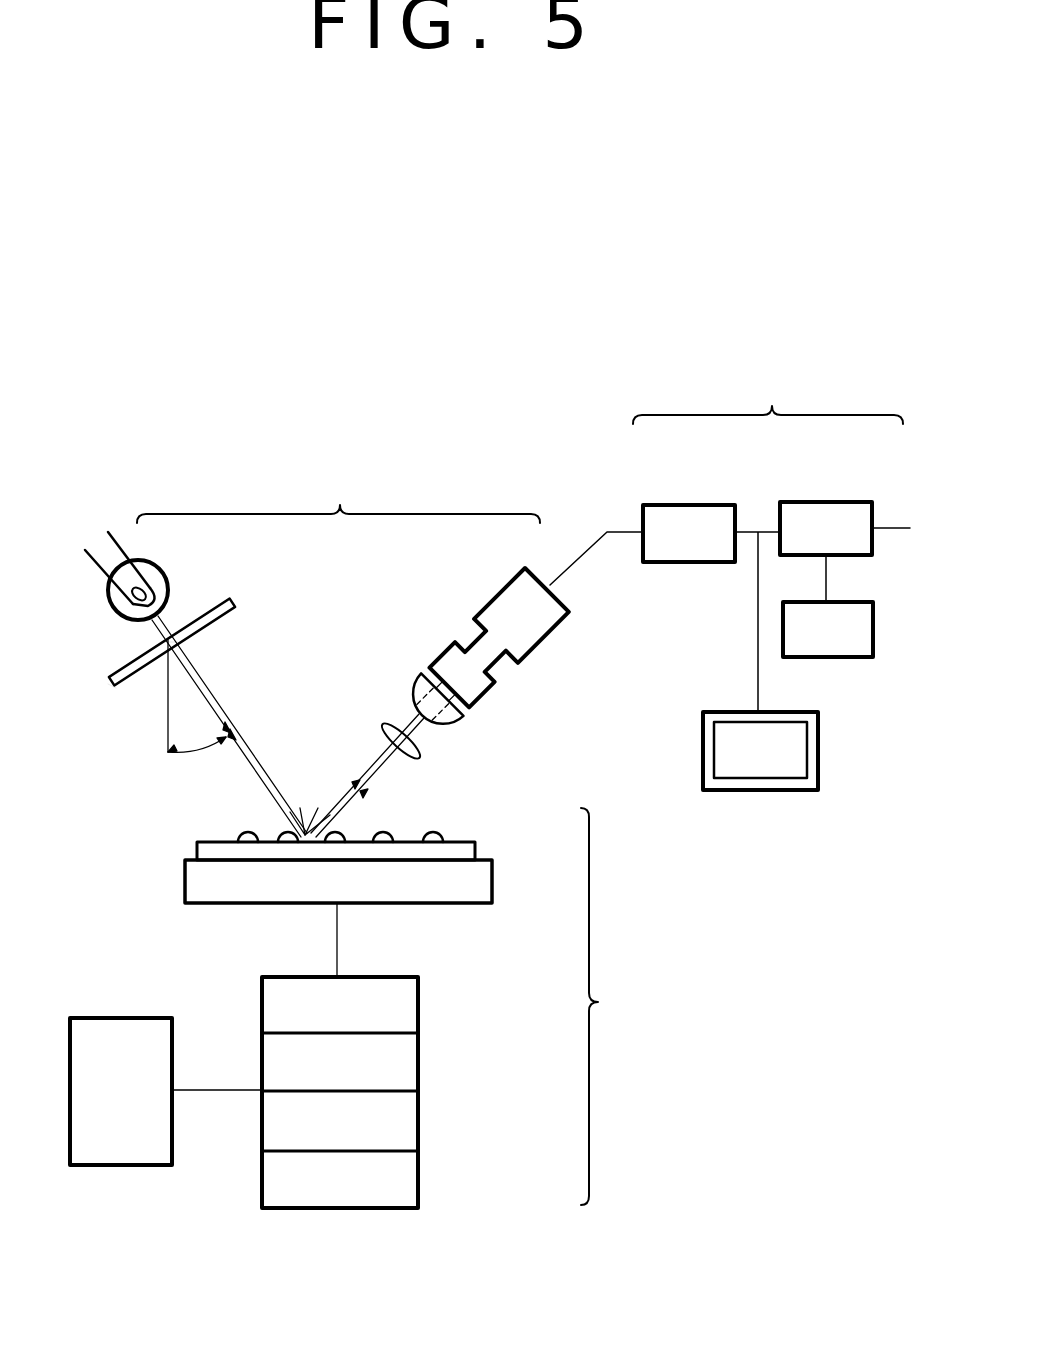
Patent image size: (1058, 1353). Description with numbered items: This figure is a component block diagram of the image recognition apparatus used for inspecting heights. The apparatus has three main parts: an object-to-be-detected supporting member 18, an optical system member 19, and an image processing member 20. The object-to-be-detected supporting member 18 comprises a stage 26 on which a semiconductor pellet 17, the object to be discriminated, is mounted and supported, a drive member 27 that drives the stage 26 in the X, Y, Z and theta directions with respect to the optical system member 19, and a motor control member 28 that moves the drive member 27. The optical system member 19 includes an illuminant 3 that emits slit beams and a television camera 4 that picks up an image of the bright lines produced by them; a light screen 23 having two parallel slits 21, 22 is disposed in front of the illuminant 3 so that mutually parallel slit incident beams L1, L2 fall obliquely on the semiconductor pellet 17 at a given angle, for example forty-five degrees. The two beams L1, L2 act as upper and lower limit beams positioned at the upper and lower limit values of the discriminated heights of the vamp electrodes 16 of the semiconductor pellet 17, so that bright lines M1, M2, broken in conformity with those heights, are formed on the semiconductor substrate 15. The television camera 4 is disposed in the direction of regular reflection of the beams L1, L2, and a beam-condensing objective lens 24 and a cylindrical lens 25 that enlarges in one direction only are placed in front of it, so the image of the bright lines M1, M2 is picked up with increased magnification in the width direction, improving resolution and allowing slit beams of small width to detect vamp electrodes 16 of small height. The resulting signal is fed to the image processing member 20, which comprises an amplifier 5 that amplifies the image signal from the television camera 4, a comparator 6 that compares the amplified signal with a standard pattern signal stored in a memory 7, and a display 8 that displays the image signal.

The illuminant 3 is at (108, 600).
The television camera 4 is at (482, 613).
The amplifier 5 is at (688, 505).
The comparator 6 is at (822, 502).
The memory 7 is at (873, 636).
The display 8 is at (818, 762).
The semiconductor substrate 15 is at (478, 848).
The vamp electrodes 16 is at (440, 832).
The semiconductor pellet 17 is at (166, 848).
The object-to-be-detected supporting member 18 is at (611, 1006).
The optical system member 19 is at (338, 491).
The image processing member 20 is at (768, 398).
The slit 21 is at (205, 607).
The slit 22 is at (164, 638).
The light screen 23 is at (110, 688).
The beam-condensing objective lens 24 is at (398, 735).
The cylindrical lens 25 is at (422, 688).
The stage 26 is at (485, 905).
The drive member 27 is at (418, 1170).
The motor control member 28 is at (176, 1160).
The slit incident beam L1 is at (229, 726).
The slit incident beam L2 is at (314, 775).
The bright line M1 is at (318, 826).
The bright line M2 is at (298, 826).